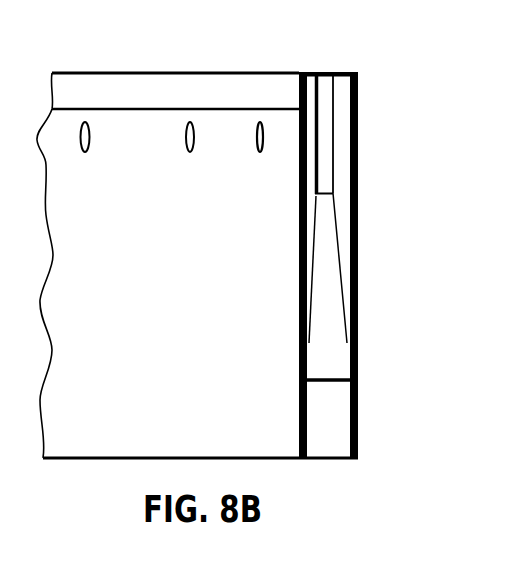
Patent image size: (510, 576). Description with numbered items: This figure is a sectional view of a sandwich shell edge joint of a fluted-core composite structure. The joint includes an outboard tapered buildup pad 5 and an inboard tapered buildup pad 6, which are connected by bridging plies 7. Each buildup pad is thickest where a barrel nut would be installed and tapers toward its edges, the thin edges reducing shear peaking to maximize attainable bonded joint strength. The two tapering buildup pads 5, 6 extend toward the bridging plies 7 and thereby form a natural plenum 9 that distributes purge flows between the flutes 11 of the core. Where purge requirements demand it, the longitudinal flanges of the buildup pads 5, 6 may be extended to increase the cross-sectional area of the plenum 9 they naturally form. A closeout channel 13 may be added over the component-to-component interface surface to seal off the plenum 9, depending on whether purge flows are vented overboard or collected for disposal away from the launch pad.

The outboard tapered buildup pad 5 is at (347, 250).
The inboard tapered buildup pad 6 is at (305, 220).
The bridging plies 7 is at (318, 193).
The plenum 9 is at (325, 283).
The flutes 11 is at (305, 390).
The closeout channel 13 is at (333, 88).